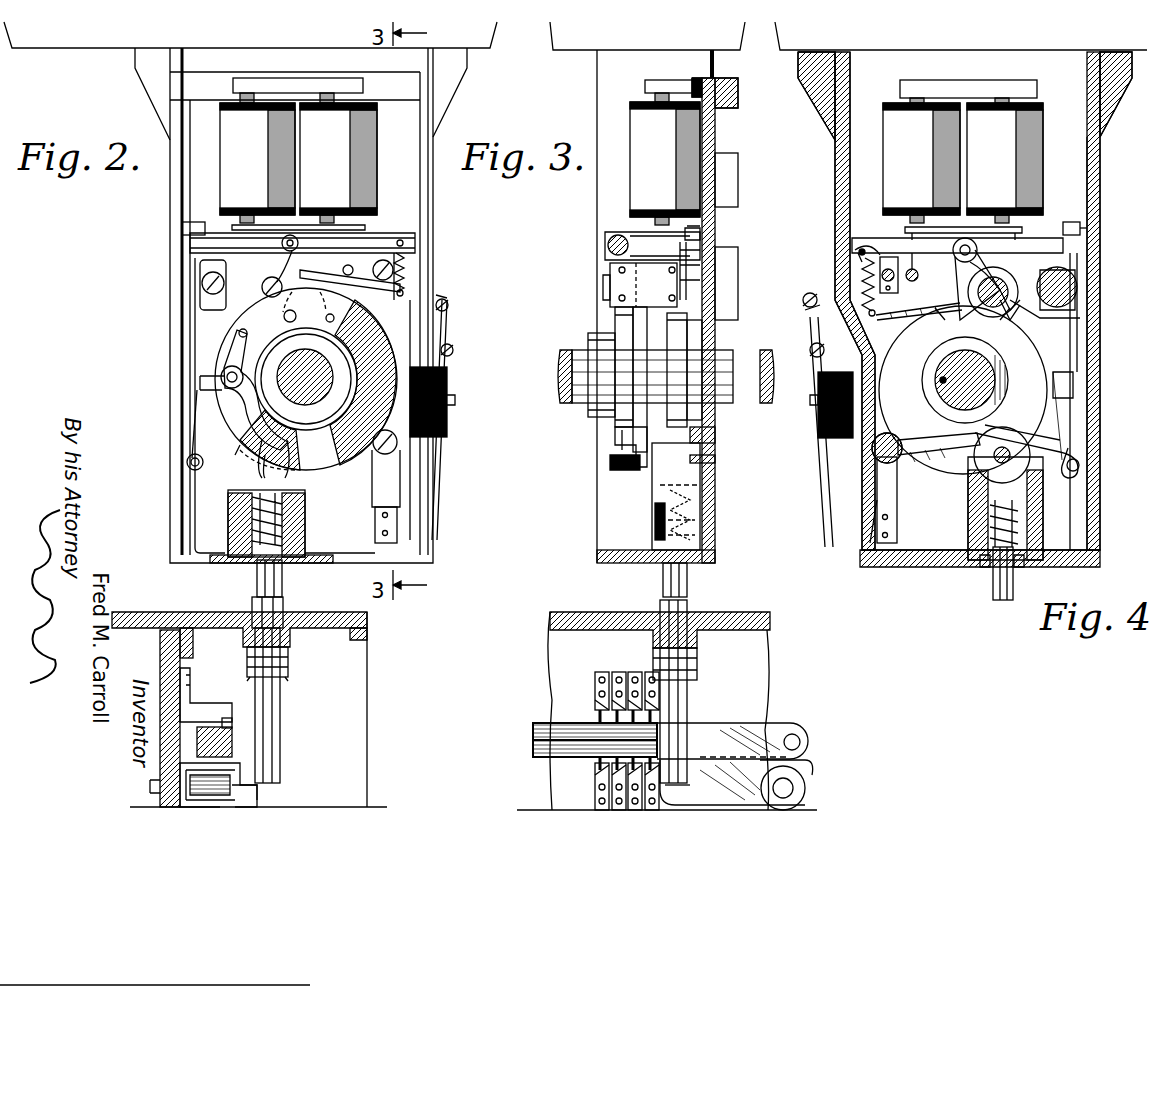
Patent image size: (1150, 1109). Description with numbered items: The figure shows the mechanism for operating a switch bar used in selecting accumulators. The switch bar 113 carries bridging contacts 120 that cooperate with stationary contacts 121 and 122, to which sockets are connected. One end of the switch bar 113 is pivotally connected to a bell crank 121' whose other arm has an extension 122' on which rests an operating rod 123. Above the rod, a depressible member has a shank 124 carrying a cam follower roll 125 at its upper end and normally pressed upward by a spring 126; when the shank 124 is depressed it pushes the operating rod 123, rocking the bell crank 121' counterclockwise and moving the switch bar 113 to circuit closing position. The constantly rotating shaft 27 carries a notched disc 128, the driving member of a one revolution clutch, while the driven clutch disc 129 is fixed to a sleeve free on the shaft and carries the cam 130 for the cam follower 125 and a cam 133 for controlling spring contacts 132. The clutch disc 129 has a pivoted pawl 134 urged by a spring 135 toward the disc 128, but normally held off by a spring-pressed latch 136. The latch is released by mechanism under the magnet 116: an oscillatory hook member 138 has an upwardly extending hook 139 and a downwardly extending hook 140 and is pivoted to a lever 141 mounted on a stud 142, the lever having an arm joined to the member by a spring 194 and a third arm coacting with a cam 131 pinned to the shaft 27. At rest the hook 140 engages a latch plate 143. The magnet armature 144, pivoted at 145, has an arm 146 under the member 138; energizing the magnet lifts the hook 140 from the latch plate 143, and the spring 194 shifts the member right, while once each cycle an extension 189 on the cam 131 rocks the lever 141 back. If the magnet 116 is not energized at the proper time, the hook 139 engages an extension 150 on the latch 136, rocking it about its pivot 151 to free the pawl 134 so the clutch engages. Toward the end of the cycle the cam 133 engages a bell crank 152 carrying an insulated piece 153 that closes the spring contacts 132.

In FIG. 2, the constantly rotating shaft 27 is at (317, 360).
In FIG. 3, the constantly rotating shaft 27 is at (666, 376).
In FIG. 2, the switch bar 113 is at (232, 738).
In FIG. 3, the switch bar 113 is at (713, 725).
In FIG. 2, the magnet 116 is at (358, 178).
In FIG. 3, the magnet 116 is at (673, 147).
In FIG. 4, the magnet 116 is at (1027, 163).
In FIG. 2, the bridging contacts 120 is at (228, 723).
In FIG. 3, the bridging contacts 120 is at (657, 713).
In FIG. 2, the stationary contacts 121 is at (249, 787).
In FIG. 3, the stationary contacts 121 is at (605, 783).
In FIG. 3, the bell crank 121' is at (748, 741).
In FIG. 2, the stationary contacts 122 is at (214, 695).
In FIG. 3, the stationary contacts 122 is at (605, 695).
In FIG. 2, the extension 122' is at (294, 781).
In FIG. 3, the extension 122' is at (692, 796).
In FIG. 2, the operating rod 123 is at (280, 700).
In FIG. 3, the operating rod 123 is at (697, 600).
In FIG. 2, the shank 124 is at (283, 580).
In FIG. 3, the shank 124 is at (673, 582).
In FIG. 2, the cam follower roll 125 is at (300, 478).
In FIG. 4, the cam follower roll 125 is at (1025, 470).
In FIG. 2, the spring 126 is at (305, 513).
In FIG. 2, the notched disc 128 is at (338, 368).
In FIG. 3, the notched disc 128 is at (625, 372).
In FIG. 4, the notched disc 128 is at (965, 380).
In FIG. 2, the clutch disc 129 is at (383, 367).
In FIG. 3, the clutch disc 129 is at (631, 379).
In FIG. 2, the cam 130 is at (353, 322).
In FIG. 3, the cam 130 is at (713, 313).
In FIG. 4, the cam 130 is at (963, 390).
In FIG. 3, the cam 131 is at (695, 353).
In FIG. 4, the cam 131 is at (1003, 370).
In FIG. 2, the spring contacts 132 is at (433, 537).
In FIG. 4, the spring contacts 132 is at (843, 533).
In FIG. 2, the cam 133 is at (393, 447).
In FIG. 3, the cam 133 is at (707, 413).
In FIG. 2, the pawl 134 is at (238, 398).
In FIG. 2, the spring 135 is at (237, 325).
In FIG. 2, the latch 136 is at (197, 330).
In FIG. 4, the latch 136 is at (1073, 343).
In FIG. 4, the oscillatory hook member 138 is at (1000, 279).
In FIG. 4, the upwardly extending hook 139 is at (1070, 253).
In FIG. 4, the downwardly extending hook 140 is at (858, 255).
In FIG. 2, the lever 141 is at (296, 280).
In FIG. 4, the lever 141 is at (912, 325).
In FIG. 4, the stud 142 is at (1080, 318).
In FIG. 3, the latch plate 143 is at (640, 285).
In FIG. 4, the latch plate 143 is at (898, 287).
In FIG. 3, the armature 144 is at (687, 233).
In FIG. 4, the armature 144 is at (1030, 229).
In FIG. 3, the pivot 145 is at (610, 240).
In FIG. 3, the arm 146 is at (647, 257).
In FIG. 4, the arm 146 is at (915, 260).
In FIG. 2, the extension 150 is at (182, 228).
In FIG. 4, the extension 150 is at (1080, 228).
In FIG. 4, the pivot 151 is at (1077, 287).
In FIG. 2, the bell crank 152 is at (387, 473).
In FIG. 3, the bell crank 152 is at (653, 480).
In FIG. 4, the bell crank 152 is at (913, 458).
In FIG. 2, the insulated piece 153 is at (395, 548).
In FIG. 4, the insulated piece 153 is at (897, 527).
In FIG. 4, the extension 189 is at (1027, 440).
In FIG. 2, the spring 194 is at (402, 272).
In FIG. 4, the spring 194 is at (863, 280).